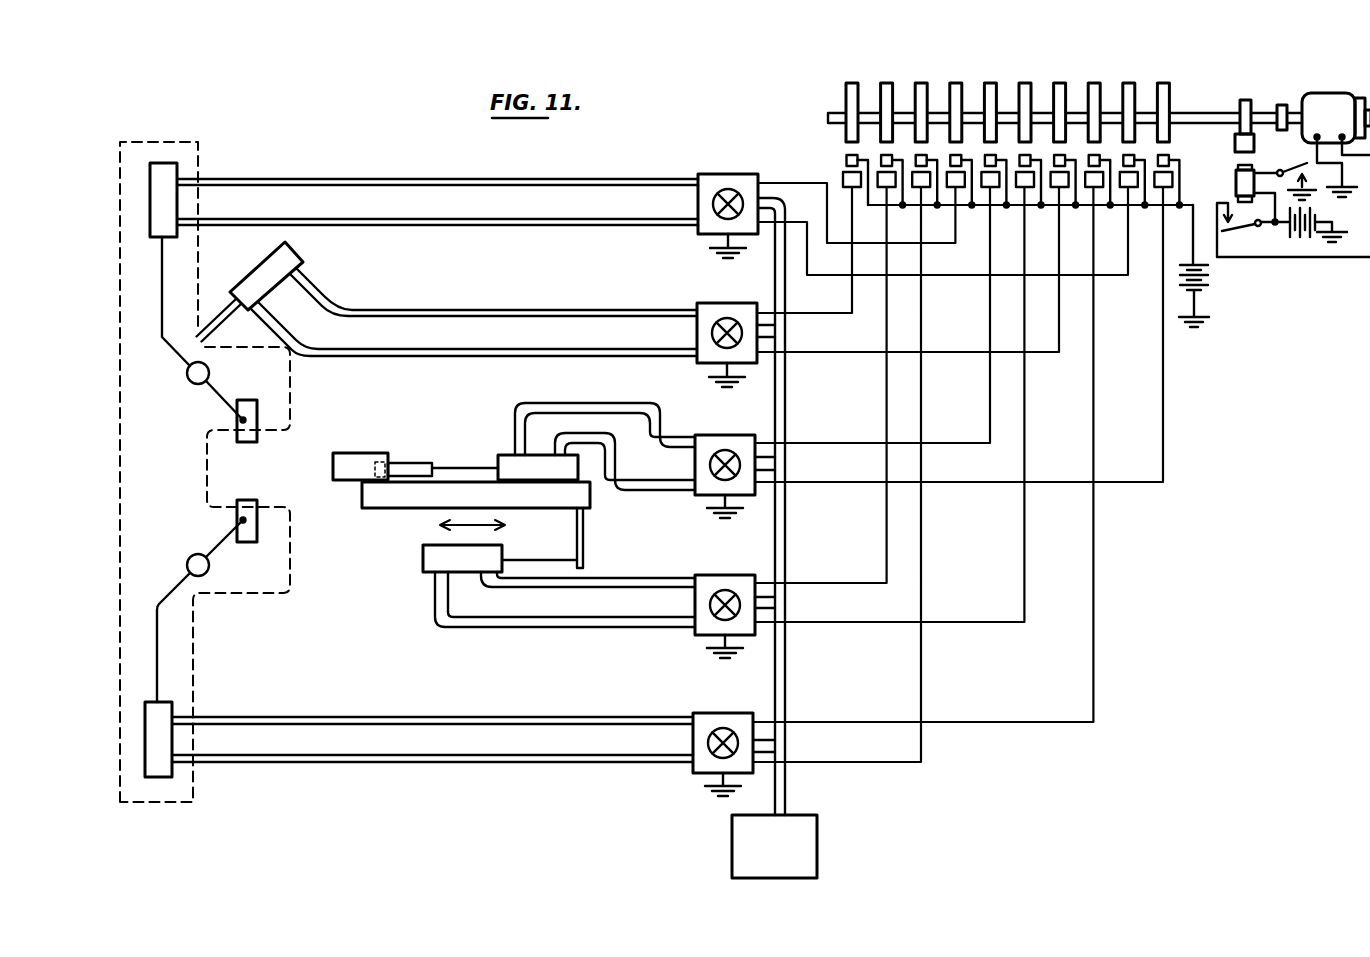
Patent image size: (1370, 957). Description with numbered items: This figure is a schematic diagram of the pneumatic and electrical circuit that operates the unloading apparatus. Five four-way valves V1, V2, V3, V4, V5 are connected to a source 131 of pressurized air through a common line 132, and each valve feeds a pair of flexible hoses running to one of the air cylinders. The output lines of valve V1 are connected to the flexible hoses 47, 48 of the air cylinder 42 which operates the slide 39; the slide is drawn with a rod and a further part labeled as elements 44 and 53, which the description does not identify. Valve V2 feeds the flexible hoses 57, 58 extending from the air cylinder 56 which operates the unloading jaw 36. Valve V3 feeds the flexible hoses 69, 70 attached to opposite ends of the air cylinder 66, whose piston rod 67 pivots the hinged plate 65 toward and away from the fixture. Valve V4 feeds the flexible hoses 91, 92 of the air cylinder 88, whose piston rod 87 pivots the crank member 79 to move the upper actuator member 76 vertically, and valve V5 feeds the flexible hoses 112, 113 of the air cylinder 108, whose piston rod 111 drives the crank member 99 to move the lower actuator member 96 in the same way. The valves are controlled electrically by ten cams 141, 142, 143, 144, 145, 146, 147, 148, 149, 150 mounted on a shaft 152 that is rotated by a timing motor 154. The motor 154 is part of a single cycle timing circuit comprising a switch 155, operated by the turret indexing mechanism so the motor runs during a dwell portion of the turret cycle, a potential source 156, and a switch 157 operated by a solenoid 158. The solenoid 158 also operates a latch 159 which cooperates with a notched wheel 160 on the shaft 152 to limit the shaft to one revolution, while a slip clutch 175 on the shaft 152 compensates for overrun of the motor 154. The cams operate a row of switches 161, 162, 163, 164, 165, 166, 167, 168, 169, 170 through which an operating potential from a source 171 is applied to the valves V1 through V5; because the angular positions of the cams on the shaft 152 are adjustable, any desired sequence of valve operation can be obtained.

The unloading jaw 36 is at (352, 443).
The slide 39 is at (388, 509).
The air cylinder 42 is at (424, 565).
The piston rod 44 is at (528, 560).
The flexible hose 47 is at (612, 628).
The flexible hose 48 is at (637, 578).
The rod 53 is at (436, 463).
The air cylinder 56 is at (505, 455).
The flexible hose 57 is at (648, 490).
The flexible hose 58 is at (570, 403).
The plate 65 is at (136, 350).
The air cylinder 66 is at (293, 262).
The piston rod 67 is at (230, 316).
The flexible hose 69 is at (548, 309).
The flexible hose 70 is at (538, 349).
The actuator member 76 is at (247, 406).
The crank member 79 is at (190, 380).
The piston rod 87 is at (162, 268).
The air cylinder 88 is at (150, 188).
The flexible hose 91 is at (608, 180).
The flexible hose 92 is at (573, 226).
The actuator member 96 is at (248, 506).
The crank member 99 is at (191, 559).
The air cylinder 108 is at (165, 707).
The piston rod 111 is at (158, 652).
The flexible hose 112 is at (508, 763).
The flexible hose 113 is at (507, 717).
The source of pressurized air 131 is at (812, 842).
The common line 132 is at (776, 793).
The cam 141 is at (846, 91).
The cam 142 is at (883, 80).
The cam 143 is at (919, 80).
The cam 144 is at (954, 83).
The cam 145 is at (989, 83).
The cam 146 is at (1028, 72).
The cam 147 is at (1060, 83).
The cam 148 is at (1100, 73).
The cam 149 is at (1130, 83).
The cam 150 is at (1164, 83).
The shaft 152 is at (830, 116).
The timing motor 154 is at (1324, 98).
The switch 155 is at (1305, 163).
The potential source 156 is at (1310, 240).
The switch 157 is at (1242, 234).
The solenoid 158 is at (1236, 181).
The latch 159 is at (1235, 146).
The notched wheel 160 is at (1244, 100).
The switch 161 is at (843, 166).
The switch 162 is at (886, 189).
The switch 163 is at (921, 189).
The switch 164 is at (955, 189).
The switch 165 is at (990, 189).
The switch 166 is at (1024, 189).
The switch 167 is at (1059, 189).
The switch 168 is at (1093, 189).
The switch 169 is at (1128, 189).
The switch 170 is at (1163, 189).
The source 171 is at (1215, 286).
The slip clutch 175 is at (1282, 105).
The four-way valve V1 is at (708, 584).
The four-way valve V2 is at (707, 443).
The four-way valve V3 is at (705, 312).
The four-way valve V4 is at (713, 181).
The four-way valve V5 is at (707, 720).